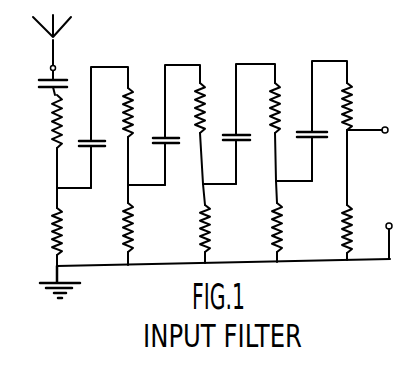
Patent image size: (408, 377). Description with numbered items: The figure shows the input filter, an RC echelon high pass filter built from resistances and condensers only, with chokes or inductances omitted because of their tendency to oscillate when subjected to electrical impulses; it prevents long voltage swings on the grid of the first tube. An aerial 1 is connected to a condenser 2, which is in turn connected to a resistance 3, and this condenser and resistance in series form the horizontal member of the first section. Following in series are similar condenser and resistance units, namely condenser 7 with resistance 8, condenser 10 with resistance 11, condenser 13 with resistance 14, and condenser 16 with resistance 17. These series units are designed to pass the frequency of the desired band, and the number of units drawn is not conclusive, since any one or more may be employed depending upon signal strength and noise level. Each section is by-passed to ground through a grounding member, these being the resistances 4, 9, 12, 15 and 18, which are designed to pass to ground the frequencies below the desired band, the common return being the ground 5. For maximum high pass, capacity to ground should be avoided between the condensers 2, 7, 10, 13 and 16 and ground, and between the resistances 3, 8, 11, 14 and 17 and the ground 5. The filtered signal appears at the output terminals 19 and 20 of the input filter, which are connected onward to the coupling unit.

The aerial 1 is at (42, 35).
The condenser 2 is at (45, 89).
The resistance 3 is at (49, 142).
The resistance 4 is at (50, 236).
The ground 5 is at (47, 288).
The condenser 7 is at (86, 147).
The resistance 8 is at (122, 100).
The resistance 9 is at (122, 222).
The condenser 10 is at (158, 145).
The resistance 11 is at (196, 98).
The resistance 12 is at (199, 222).
The condenser 13 is at (230, 143).
The resistance 14 is at (271, 98).
The resistance 15 is at (269, 221).
The condenser 16 is at (299, 141).
The resistance 17 is at (338, 97).
The resistance 18 is at (340, 221).
The output terminal 19 is at (381, 137).
The output terminal 20 is at (385, 231).